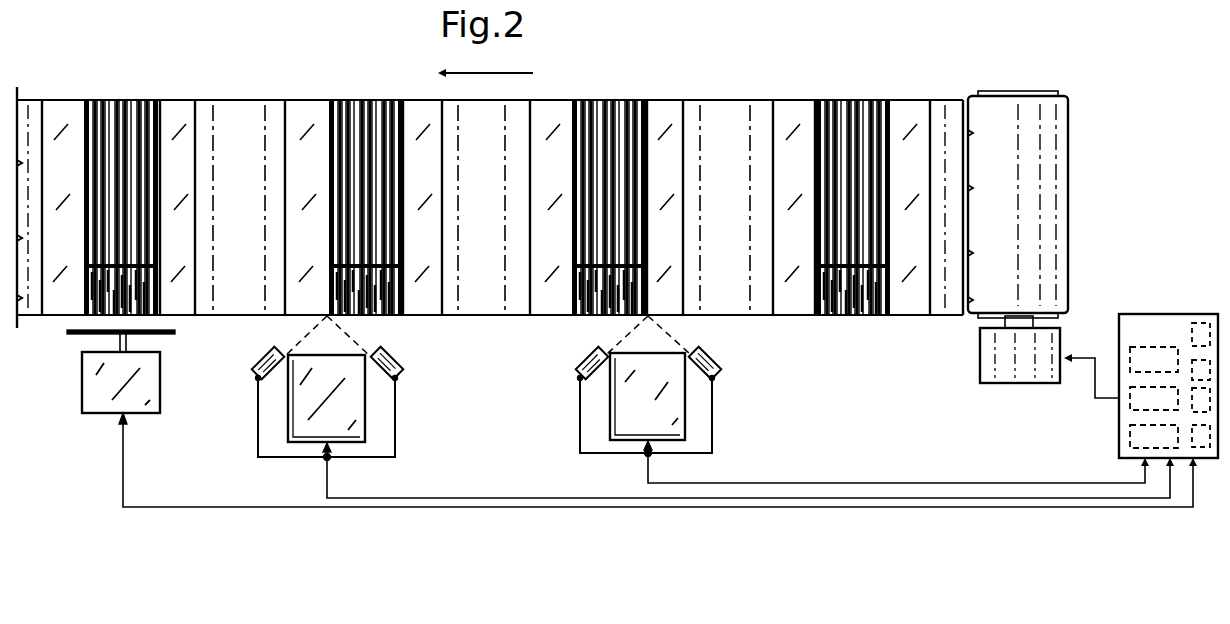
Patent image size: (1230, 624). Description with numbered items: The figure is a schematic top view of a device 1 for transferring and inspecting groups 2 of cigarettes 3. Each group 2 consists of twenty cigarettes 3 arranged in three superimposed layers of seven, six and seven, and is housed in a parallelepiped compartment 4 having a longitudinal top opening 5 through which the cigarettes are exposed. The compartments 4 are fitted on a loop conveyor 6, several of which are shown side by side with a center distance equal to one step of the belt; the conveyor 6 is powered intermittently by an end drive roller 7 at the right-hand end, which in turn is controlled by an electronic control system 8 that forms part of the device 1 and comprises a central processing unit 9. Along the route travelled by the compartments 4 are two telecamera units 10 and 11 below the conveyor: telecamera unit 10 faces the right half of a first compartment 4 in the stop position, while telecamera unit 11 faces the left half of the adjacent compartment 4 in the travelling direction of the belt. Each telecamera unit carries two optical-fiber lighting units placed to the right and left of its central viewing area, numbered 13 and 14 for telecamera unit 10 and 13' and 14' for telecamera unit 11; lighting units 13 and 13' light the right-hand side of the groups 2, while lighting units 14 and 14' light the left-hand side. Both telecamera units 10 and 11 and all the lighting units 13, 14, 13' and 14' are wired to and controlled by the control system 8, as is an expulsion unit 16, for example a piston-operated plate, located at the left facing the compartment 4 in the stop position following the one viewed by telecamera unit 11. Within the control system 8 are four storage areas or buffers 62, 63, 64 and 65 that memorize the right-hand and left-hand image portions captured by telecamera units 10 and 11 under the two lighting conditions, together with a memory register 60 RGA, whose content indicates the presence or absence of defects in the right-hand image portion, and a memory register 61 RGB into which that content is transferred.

The device 1 is at (1050, 57).
The group of cigarettes 2 is at (126, 97).
The cigarettes 3 is at (140, 155).
The compartment 4 is at (204, 150).
The longitudinal top opening 5 is at (155, 142).
The loop conveyor 6 is at (733, 140).
The end drive roller 7 is at (1040, 388).
The electronic control system 8 is at (1130, 312).
The central processing unit 9 is at (1163, 342).
The telecamera unit 10 is at (604, 414).
The telecamera unit 11 is at (285, 428).
The lighting unit 13 is at (727, 362).
The lighting unit 13' is at (412, 364).
The lighting unit 14 is at (570, 362).
The lighting unit 14' is at (246, 364).
The expulsion unit 16 is at (148, 416).
The memory register RGA 60 is at (1128, 402).
The memory register RGB 61 is at (1128, 434).
The storage area 62 is at (1203, 322).
The storage area 63 is at (1192, 330).
The storage area 64 is at (1210, 460).
The storage area 65 is at (1197, 460).